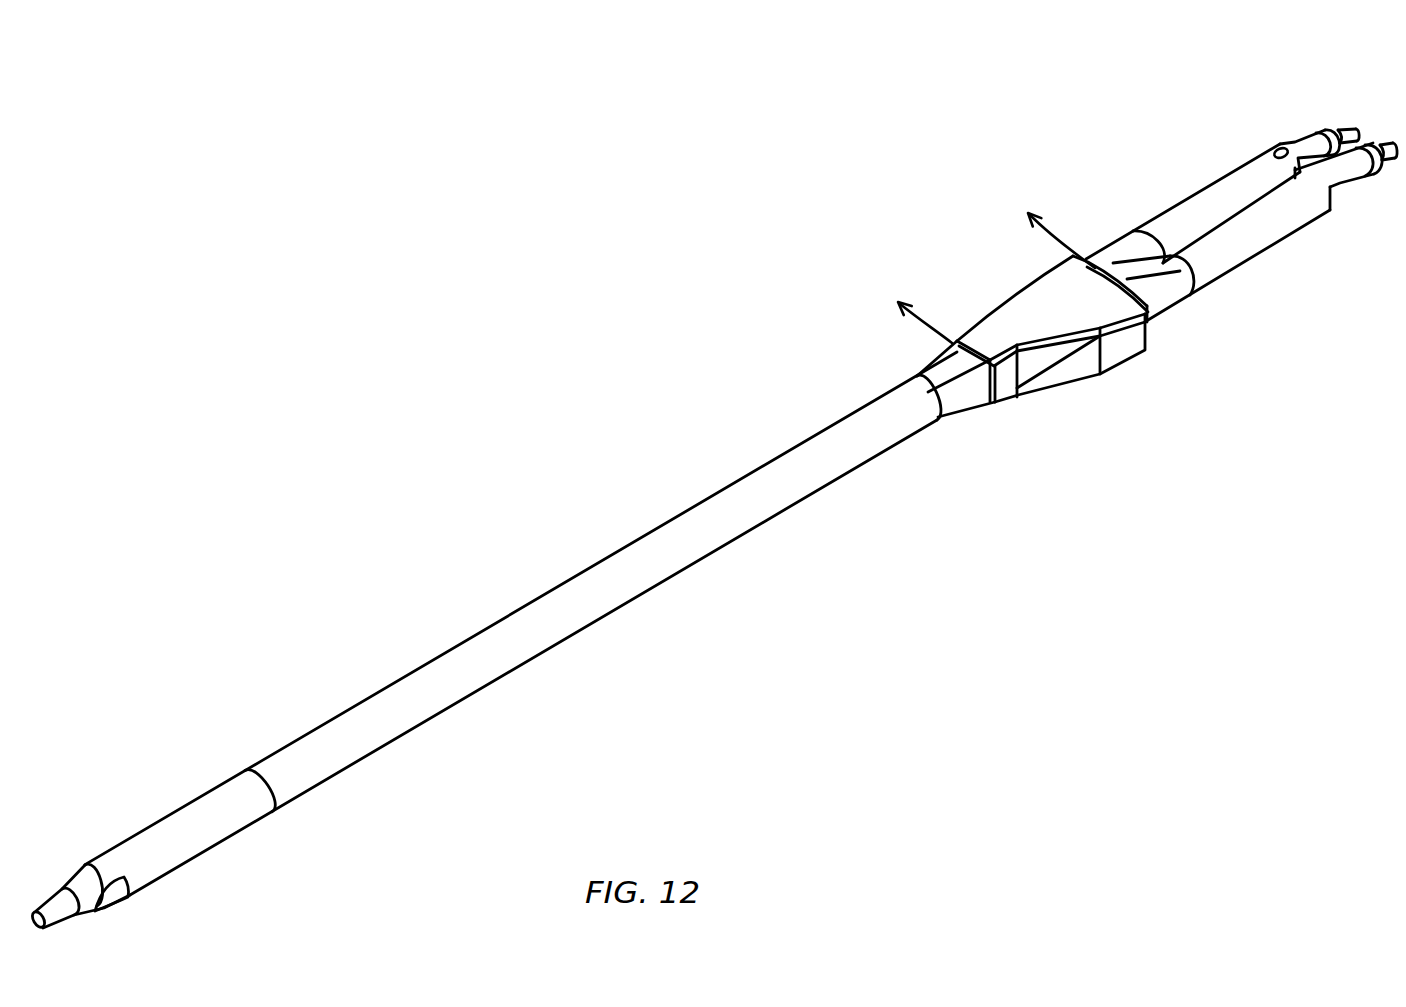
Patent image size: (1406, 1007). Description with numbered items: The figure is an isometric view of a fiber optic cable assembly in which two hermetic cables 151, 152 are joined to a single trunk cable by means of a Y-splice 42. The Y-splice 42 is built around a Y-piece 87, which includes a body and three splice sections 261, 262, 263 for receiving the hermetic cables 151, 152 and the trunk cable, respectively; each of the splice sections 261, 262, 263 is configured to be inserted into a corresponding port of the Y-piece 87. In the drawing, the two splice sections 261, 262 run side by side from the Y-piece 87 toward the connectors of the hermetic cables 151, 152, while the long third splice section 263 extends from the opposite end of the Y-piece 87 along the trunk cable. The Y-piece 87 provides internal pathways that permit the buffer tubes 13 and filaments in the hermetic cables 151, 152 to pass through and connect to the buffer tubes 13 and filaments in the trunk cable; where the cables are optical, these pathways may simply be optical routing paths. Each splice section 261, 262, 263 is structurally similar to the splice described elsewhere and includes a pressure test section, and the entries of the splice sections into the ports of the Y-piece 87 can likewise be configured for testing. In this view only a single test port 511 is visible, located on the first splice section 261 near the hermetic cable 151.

The Y-splice 42 is at (968, 487).
The splice section 263 is at (530, 652).
The Y-piece 87 is at (1113, 354).
The splice section 261 is at (1208, 202).
The splice section 262 is at (1232, 258).
The hermetic cable 151 is at (1330, 128).
The hermetic cable 152 is at (1386, 176).
The test port 511 is at (1281, 148).
The buffer tubes 13 is at (984, 270).